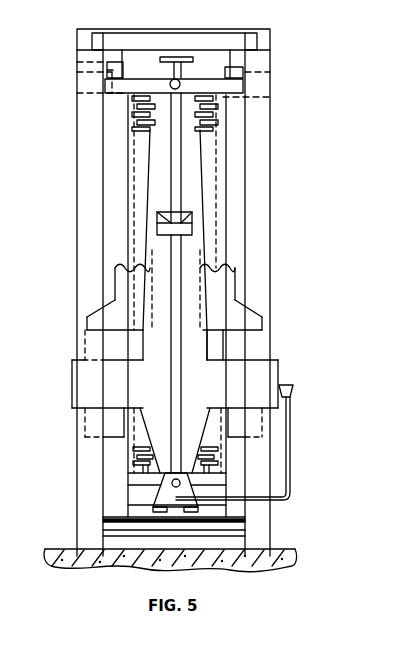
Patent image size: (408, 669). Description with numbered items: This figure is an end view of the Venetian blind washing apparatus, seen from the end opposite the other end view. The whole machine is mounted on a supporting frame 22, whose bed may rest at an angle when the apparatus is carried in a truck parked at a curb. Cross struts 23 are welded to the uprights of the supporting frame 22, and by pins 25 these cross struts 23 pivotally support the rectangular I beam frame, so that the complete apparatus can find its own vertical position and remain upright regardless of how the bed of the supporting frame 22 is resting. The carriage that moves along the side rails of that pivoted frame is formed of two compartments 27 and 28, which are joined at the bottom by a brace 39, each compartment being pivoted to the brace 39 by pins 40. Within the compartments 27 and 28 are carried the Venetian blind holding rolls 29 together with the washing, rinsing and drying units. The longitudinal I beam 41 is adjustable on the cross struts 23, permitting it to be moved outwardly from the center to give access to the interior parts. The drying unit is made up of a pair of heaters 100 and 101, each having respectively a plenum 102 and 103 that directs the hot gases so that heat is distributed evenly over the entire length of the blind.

The supporting frame 22 is at (257, 175).
The cross struts 23 is at (132, 84).
The pins 25 is at (182, 84).
The compartment 27 is at (208, 152).
The compartment 28 is at (120, 162).
The Venetian blind holding rolls 29 is at (135, 108).
The brace 39 is at (140, 496).
The pins 40 is at (75, 67).
The longitudinal I beam 41 is at (268, 85).
The heater 100 is at (113, 352).
The heater 101 is at (237, 353).
The plenum 102 is at (150, 340).
The plenum 103 is at (197, 340).